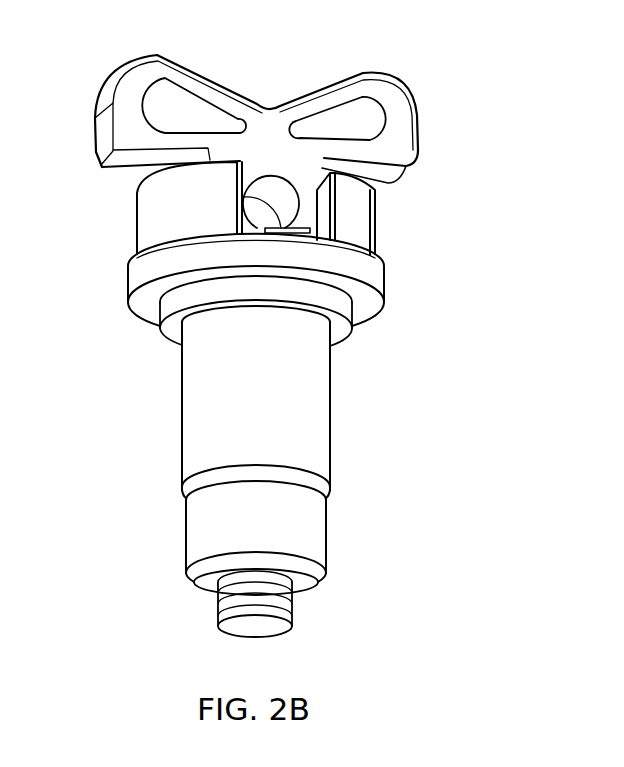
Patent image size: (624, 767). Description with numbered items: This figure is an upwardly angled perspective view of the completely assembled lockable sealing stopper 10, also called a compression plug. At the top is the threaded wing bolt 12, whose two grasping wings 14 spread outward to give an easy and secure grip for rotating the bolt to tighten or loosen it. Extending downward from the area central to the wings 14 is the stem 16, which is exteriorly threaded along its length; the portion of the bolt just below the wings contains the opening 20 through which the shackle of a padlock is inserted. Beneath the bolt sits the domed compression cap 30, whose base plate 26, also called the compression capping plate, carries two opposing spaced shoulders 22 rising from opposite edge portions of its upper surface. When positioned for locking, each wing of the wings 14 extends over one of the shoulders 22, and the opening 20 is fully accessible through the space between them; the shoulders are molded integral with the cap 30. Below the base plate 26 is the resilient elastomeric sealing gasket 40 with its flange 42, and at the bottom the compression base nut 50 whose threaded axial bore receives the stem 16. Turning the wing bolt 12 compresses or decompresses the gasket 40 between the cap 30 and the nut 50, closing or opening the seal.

The lockable sealing stopper 10 is at (222, 39).
The threaded wing bolt 12 is at (309, 56).
The wings 14 is at (148, 57).
The stem section 16 is at (218, 603).
The opening 20 is at (267, 192).
The shoulder 22 is at (143, 218).
The base plate 26 is at (127, 283).
The domed compression cap 30 is at (97, 185).
The sealing gasket 40 is at (135, 437).
The flange 42 is at (357, 318).
The compression base nut 50 is at (147, 530).